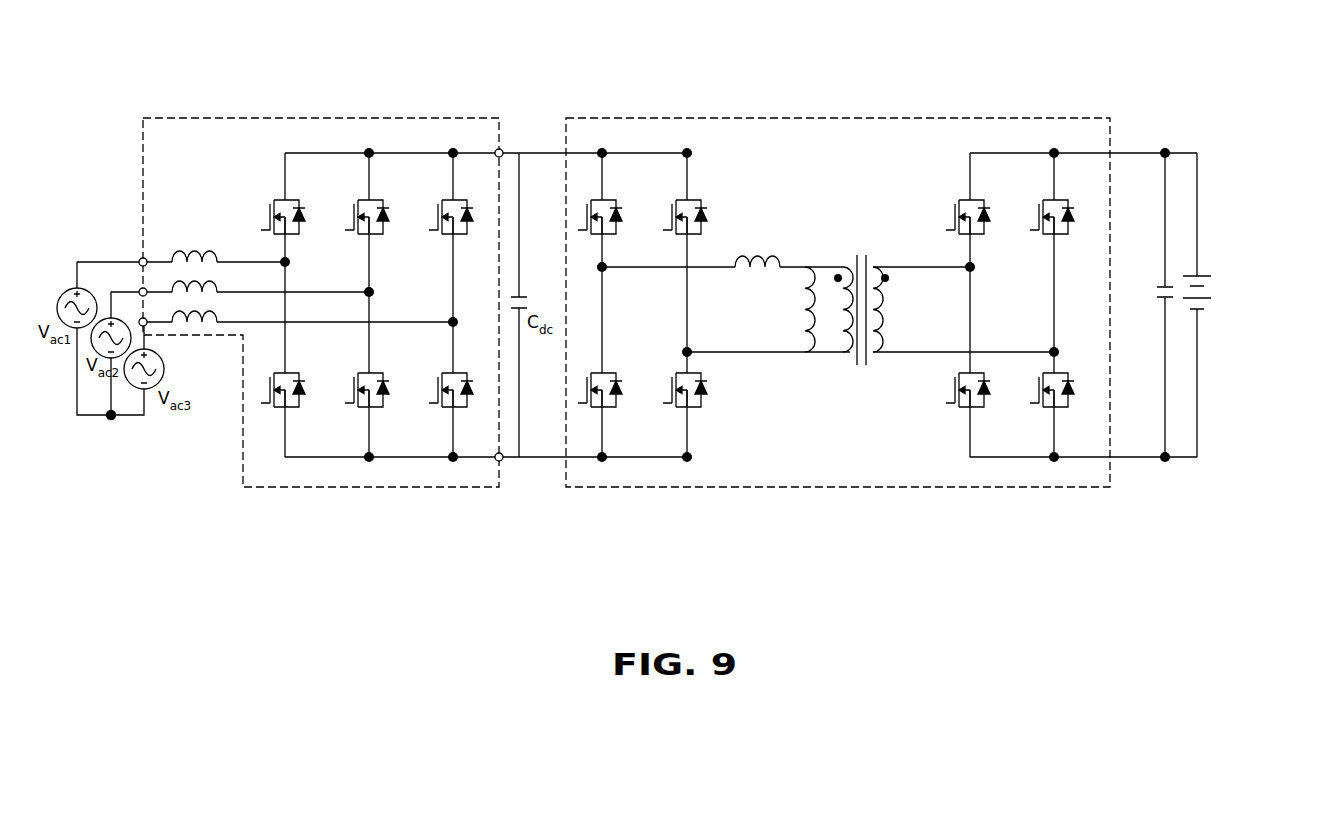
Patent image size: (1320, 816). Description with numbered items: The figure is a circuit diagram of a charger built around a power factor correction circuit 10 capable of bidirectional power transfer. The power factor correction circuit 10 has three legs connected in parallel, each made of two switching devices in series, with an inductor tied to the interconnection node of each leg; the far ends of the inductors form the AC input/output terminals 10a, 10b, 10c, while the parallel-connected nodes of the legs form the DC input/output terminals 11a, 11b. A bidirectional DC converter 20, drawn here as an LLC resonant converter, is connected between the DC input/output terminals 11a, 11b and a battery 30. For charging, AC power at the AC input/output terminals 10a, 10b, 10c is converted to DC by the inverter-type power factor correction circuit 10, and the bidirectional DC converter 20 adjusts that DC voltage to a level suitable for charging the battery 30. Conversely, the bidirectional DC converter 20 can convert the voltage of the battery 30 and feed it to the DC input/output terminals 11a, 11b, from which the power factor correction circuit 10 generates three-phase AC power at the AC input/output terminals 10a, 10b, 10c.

The power factor correction circuit 10 is at (322, 118).
The AC input/output terminal 10a is at (145, 259).
The AC input/output terminal 10b is at (142, 289).
The AC input/output terminal 10c is at (147, 325).
The DC input/output terminal 11a is at (499, 150).
The DC input/output terminal 11b is at (500, 461).
The bidirectional DC converter 20 is at (780, 118).
The battery 30 is at (1212, 286).